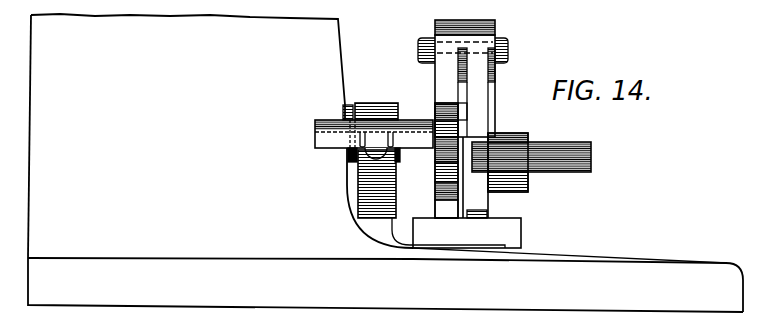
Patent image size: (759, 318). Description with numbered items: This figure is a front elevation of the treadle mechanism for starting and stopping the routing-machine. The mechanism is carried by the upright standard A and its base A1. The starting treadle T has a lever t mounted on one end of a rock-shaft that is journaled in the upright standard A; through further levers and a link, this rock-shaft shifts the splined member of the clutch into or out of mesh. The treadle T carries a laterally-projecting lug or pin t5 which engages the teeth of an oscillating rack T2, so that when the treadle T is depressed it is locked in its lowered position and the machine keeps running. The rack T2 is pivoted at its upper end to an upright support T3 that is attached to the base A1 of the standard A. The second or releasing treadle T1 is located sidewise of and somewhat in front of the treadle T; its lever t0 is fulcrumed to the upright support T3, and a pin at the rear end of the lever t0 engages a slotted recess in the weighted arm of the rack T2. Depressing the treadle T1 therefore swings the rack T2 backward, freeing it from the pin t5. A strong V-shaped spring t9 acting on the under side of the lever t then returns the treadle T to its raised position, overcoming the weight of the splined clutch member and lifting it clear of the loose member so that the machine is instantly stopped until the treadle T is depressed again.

The upright standard A is at (266, 136).
The base A1 is at (385, 280).
The treadle T is at (351, 139).
The treadle T1 is at (582, 135).
The oscillating rack T2 is at (443, 95).
The upright support T3 is at (480, 90).
The lever t is at (400, 110).
The laterally-projecting lug or pin t5 is at (436, 120).
The lever t0 is at (497, 163).
The V-shaped spring t9 is at (380, 187).